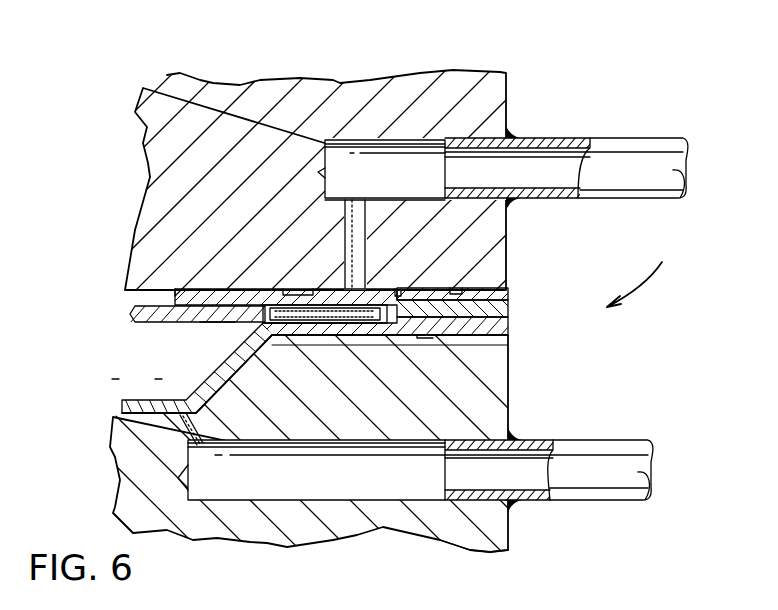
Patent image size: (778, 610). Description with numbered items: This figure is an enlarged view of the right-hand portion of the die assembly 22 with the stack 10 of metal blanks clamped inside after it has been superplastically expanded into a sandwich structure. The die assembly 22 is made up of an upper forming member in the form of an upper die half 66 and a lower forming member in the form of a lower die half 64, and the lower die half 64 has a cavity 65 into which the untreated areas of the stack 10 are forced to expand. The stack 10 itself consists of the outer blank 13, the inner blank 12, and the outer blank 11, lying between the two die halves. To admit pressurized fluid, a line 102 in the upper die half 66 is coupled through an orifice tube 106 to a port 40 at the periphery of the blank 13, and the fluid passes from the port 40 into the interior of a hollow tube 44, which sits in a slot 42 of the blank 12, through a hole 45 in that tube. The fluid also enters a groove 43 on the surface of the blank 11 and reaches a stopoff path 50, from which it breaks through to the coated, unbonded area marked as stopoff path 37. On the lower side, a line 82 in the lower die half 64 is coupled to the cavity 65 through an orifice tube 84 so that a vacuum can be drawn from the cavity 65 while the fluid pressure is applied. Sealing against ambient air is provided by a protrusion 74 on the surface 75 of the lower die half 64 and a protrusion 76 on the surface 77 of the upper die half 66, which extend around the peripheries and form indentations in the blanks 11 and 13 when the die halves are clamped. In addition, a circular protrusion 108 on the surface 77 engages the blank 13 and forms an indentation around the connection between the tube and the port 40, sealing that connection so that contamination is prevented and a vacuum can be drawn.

The upper die half 66 is at (280, 82).
The orifice tube 106 is at (407, 136).
The line 102 is at (548, 138).
The port 40 is at (367, 277).
The stack 10 is at (187, 286).
The surface 77 is at (130, 291).
The hollow tube 44 is at (290, 290).
The hole 45 is at (335, 305).
The circular protrusion 108 is at (400, 288).
The protrusion 76 is at (457, 288).
The blank 13 is at (508, 297).
The blank 12 is at (508, 308).
The blank 11 is at (508, 327).
The surface 75 is at (508, 347).
The protrusion 74 is at (508, 375).
The die assembly 22 is at (647, 268).
The stopoff path 37 is at (163, 323).
The stopoff path 50 is at (217, 324).
The cavity 65 is at (137, 378).
The slot 42 is at (417, 337).
The groove 43 is at (327, 323).
The orifice tube 84 is at (378, 508).
The lower die half 64 is at (484, 540).
The line 82 is at (590, 502).